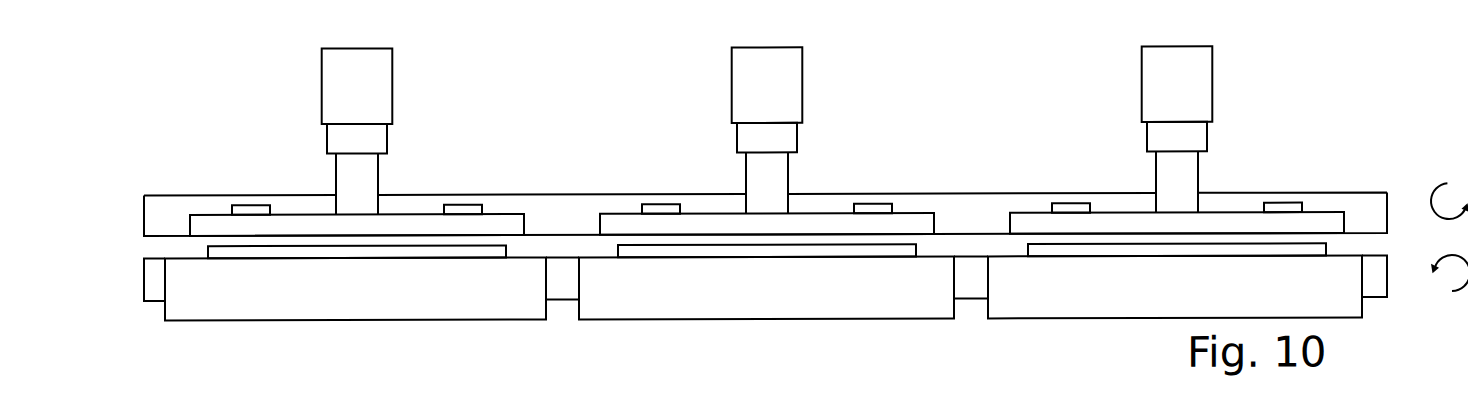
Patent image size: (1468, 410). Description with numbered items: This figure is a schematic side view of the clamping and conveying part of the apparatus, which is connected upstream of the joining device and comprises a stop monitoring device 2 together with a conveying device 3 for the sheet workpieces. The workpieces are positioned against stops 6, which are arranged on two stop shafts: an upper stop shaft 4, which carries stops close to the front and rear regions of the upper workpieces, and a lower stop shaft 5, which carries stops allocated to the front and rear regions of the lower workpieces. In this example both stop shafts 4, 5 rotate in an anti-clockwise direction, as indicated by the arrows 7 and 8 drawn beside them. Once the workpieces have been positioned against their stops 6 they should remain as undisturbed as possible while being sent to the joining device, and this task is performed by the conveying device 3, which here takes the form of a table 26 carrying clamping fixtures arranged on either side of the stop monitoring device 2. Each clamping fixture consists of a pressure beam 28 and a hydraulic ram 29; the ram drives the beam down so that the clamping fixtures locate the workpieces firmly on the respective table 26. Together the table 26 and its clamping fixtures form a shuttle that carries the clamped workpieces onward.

The stop monitoring device 2 is at (205, 174).
The conveying device 3 is at (270, 330).
The upper stop shaft 4 is at (1335, 201).
The lower stop shaft 5 is at (1371, 281).
The stop 6 is at (646, 210).
The arrow 7 is at (1447, 186).
The arrow 8 is at (1454, 295).
The table 26 is at (468, 301).
The pressure beam 28 is at (449, 225).
The hydraulic ram 29 is at (380, 140).